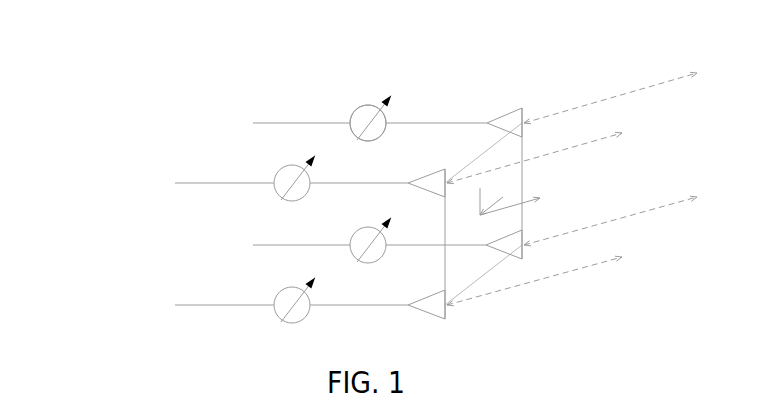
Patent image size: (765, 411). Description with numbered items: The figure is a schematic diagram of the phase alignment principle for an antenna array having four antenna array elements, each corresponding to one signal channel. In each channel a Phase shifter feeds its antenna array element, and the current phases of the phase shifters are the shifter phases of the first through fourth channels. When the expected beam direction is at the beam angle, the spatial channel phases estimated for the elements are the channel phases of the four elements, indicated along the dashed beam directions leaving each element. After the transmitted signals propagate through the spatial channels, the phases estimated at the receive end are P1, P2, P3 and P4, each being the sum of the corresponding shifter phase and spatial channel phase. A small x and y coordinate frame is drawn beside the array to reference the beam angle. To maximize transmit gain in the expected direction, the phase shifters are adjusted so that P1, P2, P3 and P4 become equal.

The phase of the first signal at the receive end P1 is at (304, 117).
The phase of the second signal at the receive end P2 is at (226, 181).
The phase of the third signal at the receive end P3 is at (306, 248).
The phase of the fourth signal at the receive end P4 is at (225, 302).
The phase shifter Phase shifter is at (373, 102).
The x axis x is at (499, 193).
The y axis y is at (468, 196).